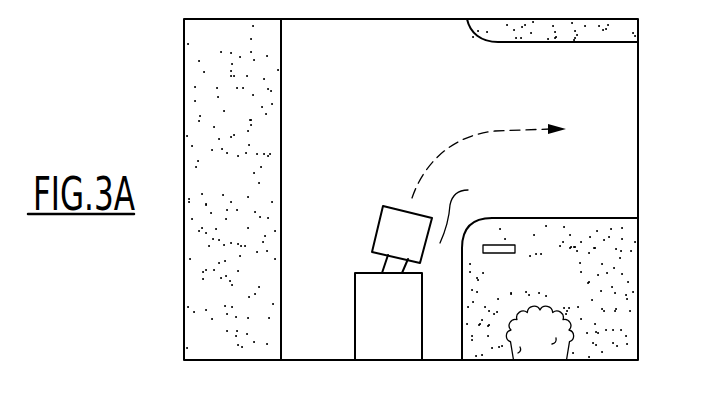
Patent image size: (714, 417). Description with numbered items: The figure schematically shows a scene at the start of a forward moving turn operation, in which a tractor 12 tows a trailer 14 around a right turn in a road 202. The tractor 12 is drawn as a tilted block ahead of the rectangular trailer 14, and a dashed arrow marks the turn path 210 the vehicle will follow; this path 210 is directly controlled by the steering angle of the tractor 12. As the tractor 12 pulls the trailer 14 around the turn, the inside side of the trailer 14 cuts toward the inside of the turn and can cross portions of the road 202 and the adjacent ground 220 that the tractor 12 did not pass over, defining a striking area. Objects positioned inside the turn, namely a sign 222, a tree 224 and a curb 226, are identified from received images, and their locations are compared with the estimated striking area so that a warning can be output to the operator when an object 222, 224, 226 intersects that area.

The tractor 12 is at (390, 230).
The trailer 14 is at (354, 313).
The road 202 is at (614, 97).
The turn path 210 is at (466, 133).
The adjacent ground 220 is at (476, 208).
The sign 222 is at (500, 253).
The tree 224 is at (538, 348).
The curb 226 is at (563, 218).